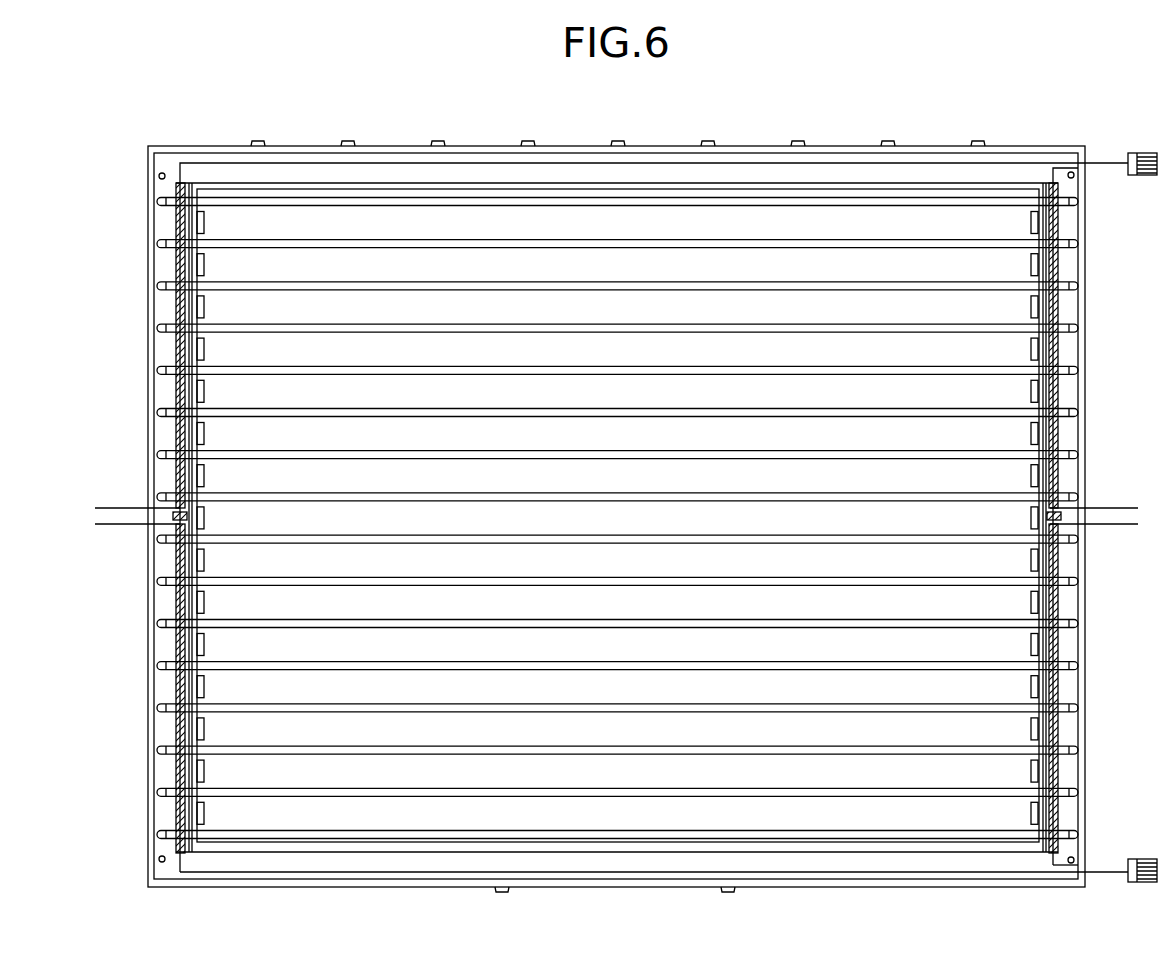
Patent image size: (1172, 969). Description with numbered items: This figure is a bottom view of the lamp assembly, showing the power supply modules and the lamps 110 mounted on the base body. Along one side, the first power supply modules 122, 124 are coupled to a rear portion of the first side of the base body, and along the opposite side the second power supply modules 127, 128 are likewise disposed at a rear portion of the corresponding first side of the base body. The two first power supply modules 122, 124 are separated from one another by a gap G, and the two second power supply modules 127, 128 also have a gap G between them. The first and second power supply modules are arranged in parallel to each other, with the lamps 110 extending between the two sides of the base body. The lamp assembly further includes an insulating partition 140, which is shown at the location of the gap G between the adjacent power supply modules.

The lamps 110 is at (568, 240).
The first power supply module 122 is at (182, 341).
The first power supply module 124 is at (182, 721).
The second power supply module 127 is at (1053, 343).
The second power supply module 128 is at (1053, 688).
The insulating partition 140 is at (180, 487).
The gap G is at (116, 468).